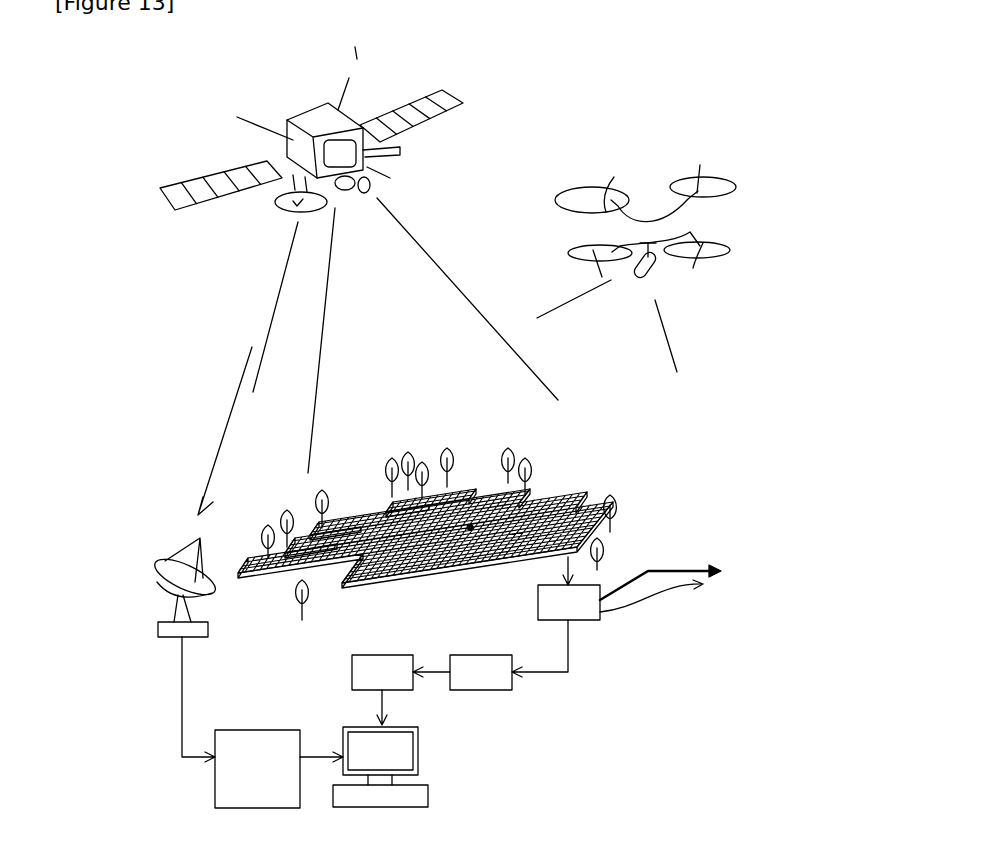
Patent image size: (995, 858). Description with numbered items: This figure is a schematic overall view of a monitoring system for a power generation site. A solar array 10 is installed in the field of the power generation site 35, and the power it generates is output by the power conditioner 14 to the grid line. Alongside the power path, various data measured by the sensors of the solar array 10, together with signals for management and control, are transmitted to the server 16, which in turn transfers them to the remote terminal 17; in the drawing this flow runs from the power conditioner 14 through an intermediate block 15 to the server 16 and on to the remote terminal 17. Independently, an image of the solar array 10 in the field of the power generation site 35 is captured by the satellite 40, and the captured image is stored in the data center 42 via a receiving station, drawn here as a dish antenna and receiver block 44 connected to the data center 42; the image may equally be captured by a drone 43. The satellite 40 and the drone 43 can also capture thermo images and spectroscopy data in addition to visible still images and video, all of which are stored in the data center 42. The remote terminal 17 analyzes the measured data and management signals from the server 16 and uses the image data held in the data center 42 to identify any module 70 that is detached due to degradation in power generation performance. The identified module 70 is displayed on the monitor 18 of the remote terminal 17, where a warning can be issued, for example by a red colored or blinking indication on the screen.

The satellite 40 is at (407, 170).
The drone 43 is at (716, 223).
The module 70 is at (392, 501).
The solar array 10 is at (572, 490).
The power generation site 35 is at (425, 549).
The power conditioner 14 is at (583, 622).
The measurement unit 15 is at (490, 692).
The server 16 is at (351, 676).
The monitor 18 is at (407, 760).
The remote terminal 17 is at (433, 784).
The data center 42 is at (255, 810).
The receiving antenna 44 is at (158, 630).